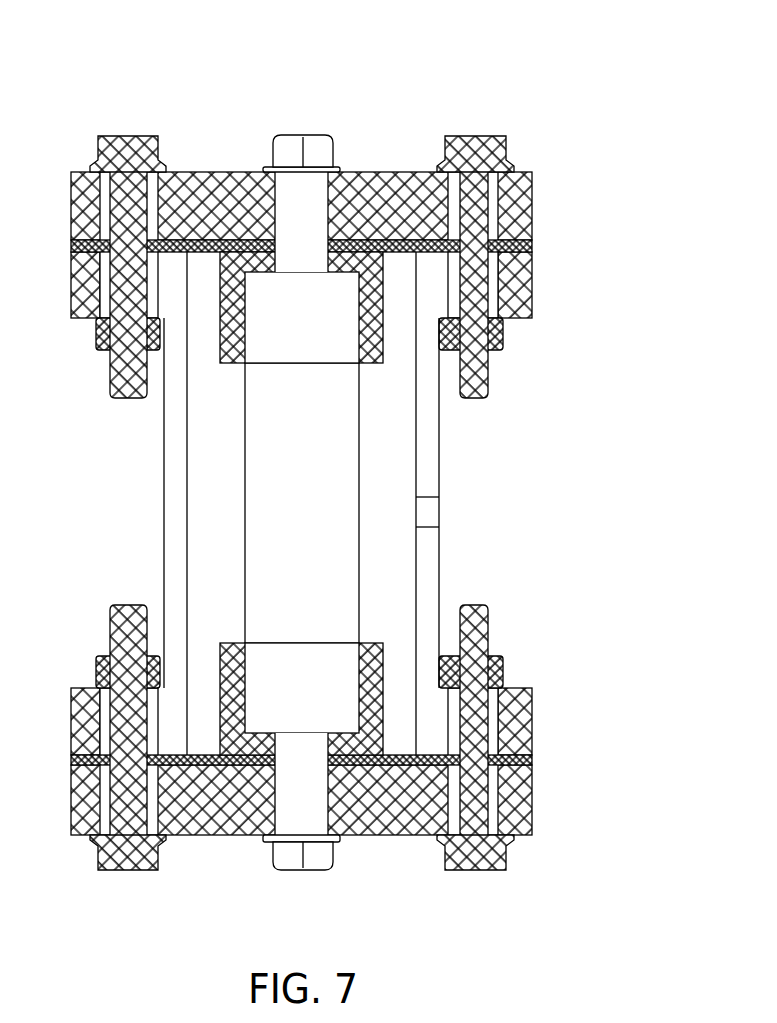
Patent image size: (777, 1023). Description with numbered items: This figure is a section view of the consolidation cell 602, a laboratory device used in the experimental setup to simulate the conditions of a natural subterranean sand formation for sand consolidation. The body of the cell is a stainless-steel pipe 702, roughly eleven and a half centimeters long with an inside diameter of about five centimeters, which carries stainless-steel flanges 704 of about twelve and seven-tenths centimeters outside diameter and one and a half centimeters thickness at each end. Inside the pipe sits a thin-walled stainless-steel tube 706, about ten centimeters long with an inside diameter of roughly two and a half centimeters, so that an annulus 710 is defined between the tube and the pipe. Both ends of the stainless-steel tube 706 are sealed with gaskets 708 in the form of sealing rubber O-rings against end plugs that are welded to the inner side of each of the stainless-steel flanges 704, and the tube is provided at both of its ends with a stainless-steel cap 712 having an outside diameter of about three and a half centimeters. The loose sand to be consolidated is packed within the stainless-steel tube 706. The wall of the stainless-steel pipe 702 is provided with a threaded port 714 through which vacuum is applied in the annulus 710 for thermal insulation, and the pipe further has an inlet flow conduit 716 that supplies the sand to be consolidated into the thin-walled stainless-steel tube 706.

The consolidation cell 602 is at (568, 62).
The stainless-steel pipe 702 is at (440, 593).
The stainless-steel flanges 704 is at (523, 205).
The stainless-steel tube 706 is at (359, 470).
The gaskets 708 is at (523, 246).
The annulus 710 is at (386, 562).
The stainless-steel cap 712 is at (372, 267).
The threaded port 714 is at (432, 514).
The inlet flow conduit 716 is at (310, 810).